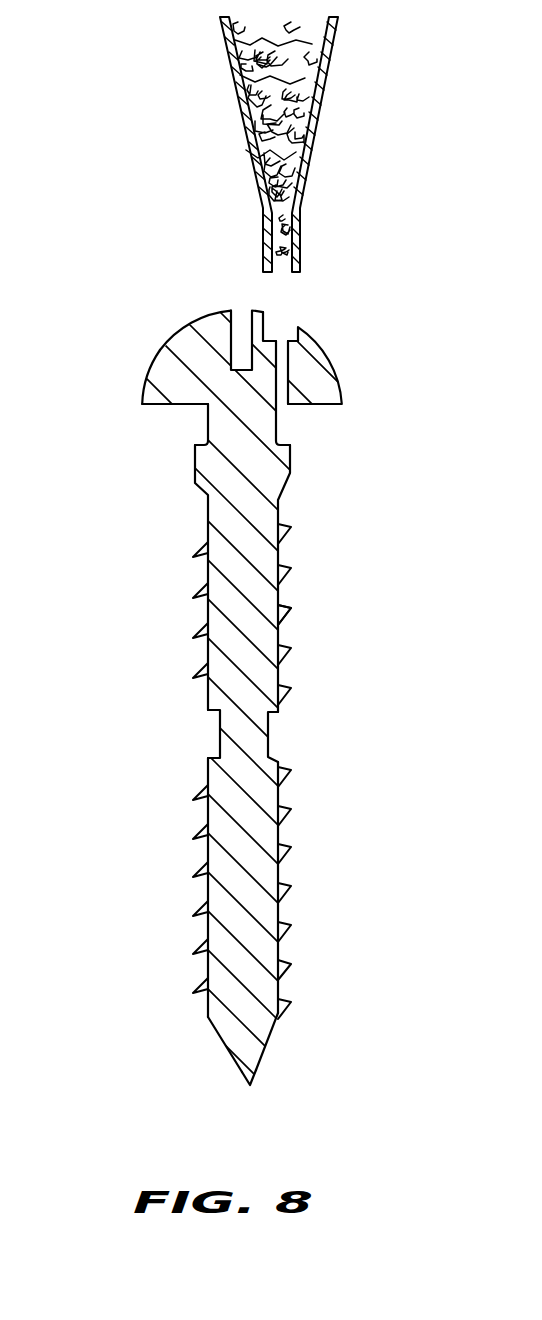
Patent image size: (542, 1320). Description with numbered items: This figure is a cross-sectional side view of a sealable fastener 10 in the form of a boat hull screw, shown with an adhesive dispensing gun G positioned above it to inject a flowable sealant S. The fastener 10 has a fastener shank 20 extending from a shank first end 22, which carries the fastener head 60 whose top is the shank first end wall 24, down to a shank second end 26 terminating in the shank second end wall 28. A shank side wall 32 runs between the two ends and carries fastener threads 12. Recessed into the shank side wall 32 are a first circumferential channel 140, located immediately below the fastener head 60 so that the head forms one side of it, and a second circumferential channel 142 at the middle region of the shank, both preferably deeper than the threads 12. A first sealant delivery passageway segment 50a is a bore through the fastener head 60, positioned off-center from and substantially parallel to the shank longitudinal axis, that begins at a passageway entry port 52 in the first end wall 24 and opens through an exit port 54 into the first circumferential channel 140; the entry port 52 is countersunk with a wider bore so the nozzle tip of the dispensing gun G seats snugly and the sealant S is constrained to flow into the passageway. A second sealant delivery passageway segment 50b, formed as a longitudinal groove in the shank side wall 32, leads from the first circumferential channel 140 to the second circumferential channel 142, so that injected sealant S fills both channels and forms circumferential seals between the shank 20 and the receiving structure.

The sealable fastener 10 is at (97, 272).
The fastener threads 12 is at (206, 635).
The fastener shank 20 is at (206, 532).
The shank first end 22 is at (338, 376).
The shank first end wall 24 is at (185, 328).
The shank second end 26 is at (213, 1032).
The shank second end wall 28 is at (233, 1065).
The shank side wall 32 is at (207, 898).
The first sealant delivery passageway segment 50a is at (281, 368).
The second sealant delivery passageway segment 50b is at (279, 593).
The passageway entry port 52 is at (287, 338).
The passageway exit port 54 is at (279, 406).
The fastener head 60 is at (157, 372).
The first circumferential channel 140 is at (208, 423).
The second circumferential channel 142 is at (220, 740).
The sealant S is at (300, 78).
The adhesive dispensing gun G is at (315, 163).